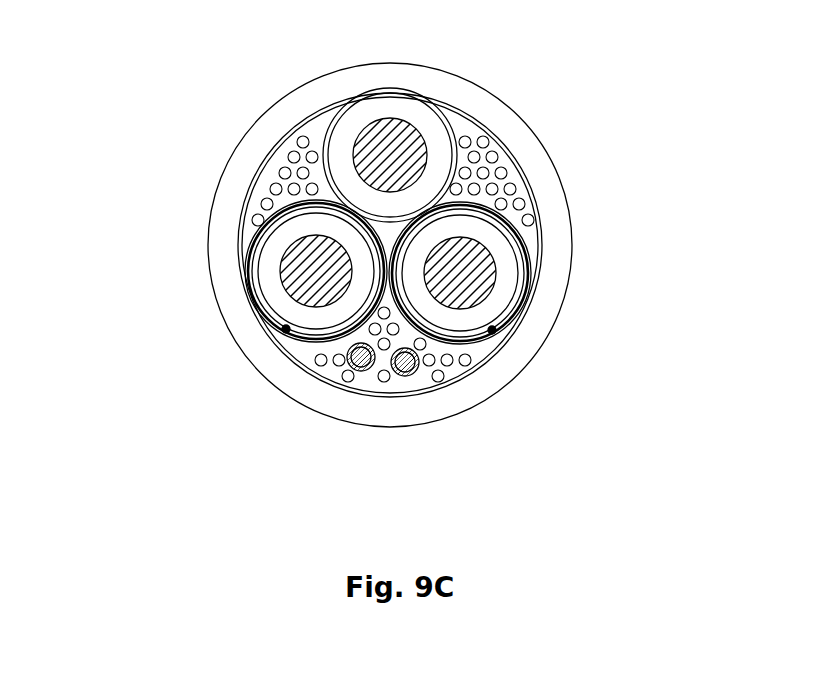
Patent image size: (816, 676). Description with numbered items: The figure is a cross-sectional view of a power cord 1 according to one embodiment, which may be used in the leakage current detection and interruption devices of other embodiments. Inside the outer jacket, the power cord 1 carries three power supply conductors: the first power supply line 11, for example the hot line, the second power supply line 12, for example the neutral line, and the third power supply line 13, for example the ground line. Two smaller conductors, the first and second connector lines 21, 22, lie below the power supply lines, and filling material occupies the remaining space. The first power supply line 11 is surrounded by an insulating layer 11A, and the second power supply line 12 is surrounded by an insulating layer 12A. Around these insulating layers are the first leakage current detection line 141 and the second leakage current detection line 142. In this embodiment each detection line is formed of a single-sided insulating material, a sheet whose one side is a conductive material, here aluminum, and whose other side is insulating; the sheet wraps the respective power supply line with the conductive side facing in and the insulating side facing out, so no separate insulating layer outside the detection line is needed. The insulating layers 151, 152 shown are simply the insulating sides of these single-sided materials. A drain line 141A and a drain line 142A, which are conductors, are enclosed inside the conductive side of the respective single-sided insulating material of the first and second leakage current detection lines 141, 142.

The power cord 1 is at (477, 89).
The first power supply line 11 is at (283, 262).
The insulating layer 11A is at (288, 233).
The second power supply line 12 is at (497, 276).
The insulating layer 12A is at (490, 243).
The third power supply line 13 is at (353, 148).
The first leakage current detection line 141 is at (258, 300).
The drain line 141A is at (283, 329).
The second leakage current detection line 142 is at (524, 302).
The drain line 142A is at (496, 331).
The insulating layer 151 is at (244, 243).
The insulating layer 152 is at (530, 246).
The first connector line 21 is at (348, 353).
The second connector line 22 is at (421, 364).